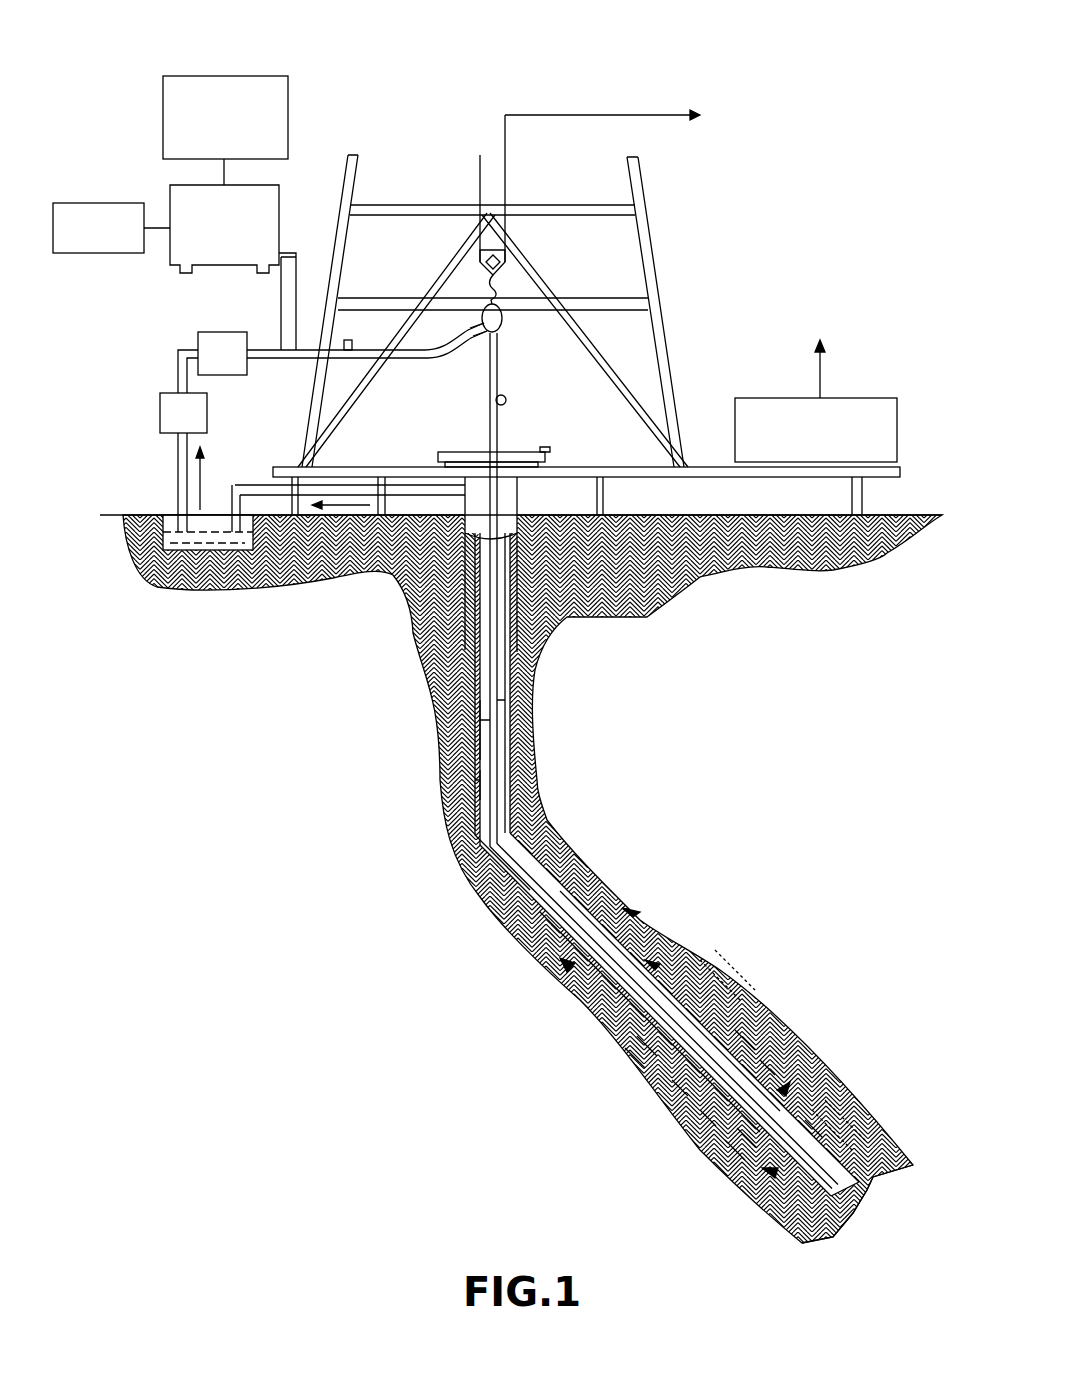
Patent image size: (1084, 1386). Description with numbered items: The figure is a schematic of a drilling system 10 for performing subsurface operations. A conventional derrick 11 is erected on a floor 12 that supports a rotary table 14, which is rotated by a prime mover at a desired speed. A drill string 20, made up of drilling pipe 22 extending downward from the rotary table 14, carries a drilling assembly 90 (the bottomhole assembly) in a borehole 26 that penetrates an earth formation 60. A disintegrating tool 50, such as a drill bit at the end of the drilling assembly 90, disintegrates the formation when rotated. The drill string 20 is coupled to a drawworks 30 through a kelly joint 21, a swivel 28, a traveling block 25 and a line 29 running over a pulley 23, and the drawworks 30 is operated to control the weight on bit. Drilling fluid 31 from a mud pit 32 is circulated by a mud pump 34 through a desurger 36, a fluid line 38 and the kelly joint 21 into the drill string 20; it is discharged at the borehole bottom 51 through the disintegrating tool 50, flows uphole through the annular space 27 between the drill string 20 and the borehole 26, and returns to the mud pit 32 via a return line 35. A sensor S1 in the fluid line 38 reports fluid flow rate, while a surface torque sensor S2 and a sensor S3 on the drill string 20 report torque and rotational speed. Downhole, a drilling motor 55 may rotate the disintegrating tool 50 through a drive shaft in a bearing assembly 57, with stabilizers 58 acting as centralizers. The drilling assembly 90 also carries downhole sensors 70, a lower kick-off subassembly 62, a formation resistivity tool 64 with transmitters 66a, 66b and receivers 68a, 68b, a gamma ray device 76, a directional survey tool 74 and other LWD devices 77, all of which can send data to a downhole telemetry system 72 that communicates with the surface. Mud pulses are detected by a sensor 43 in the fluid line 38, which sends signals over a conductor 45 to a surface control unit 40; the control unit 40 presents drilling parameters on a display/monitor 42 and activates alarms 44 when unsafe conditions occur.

The drilling system 10 is at (410, 130).
The derrick 11 is at (660, 320).
The floor 12 is at (688, 467).
The rotary table 14 is at (510, 452).
The drill string 20 is at (510, 680).
The kelly joint 21 is at (498, 398).
The drilling pipe 22 is at (480, 720).
The pulley 23 is at (503, 268).
The traveling block 25 is at (492, 304).
The borehole 26 is at (538, 835).
The annular space 27 is at (558, 870).
The swivel 28 is at (485, 350).
The line 29 is at (507, 184).
The drawworks 30 is at (860, 398).
The drilling fluid 31 is at (172, 550).
The mud pit 32 is at (215, 540).
The mud pump 34 is at (160, 413).
The return line 35 is at (418, 497).
The desurger 36 is at (198, 340).
The fluid line 38 is at (292, 358).
The surface control unit 40 is at (170, 197).
The display/monitor 42 is at (200, 76).
The sensor 43 is at (290, 345).
The alarms 44 is at (75, 253).
The conductor 45 is at (296, 257).
The disintegrating tool 50 is at (885, 1165).
The borehole bottom 51 is at (830, 1240).
The drilling motor 55 is at (655, 970).
The bearing assembly 57 is at (775, 1175).
The stabilizers 58 is at (705, 982).
The earth formation 60 is at (646, 588).
The lower kick-off subassembly 62 is at (810, 1123).
The formation resistivity tool 64 is at (714, 1118).
The transmitter 66a is at (637, 1058).
The transmitter 66b is at (740, 1150).
The receiver 68a is at (690, 1090).
The receiver 68b is at (737, 1043).
The downhole sensors 70 is at (537, 913).
The downhole telemetry system 72 is at (487, 780).
The directional survey tool 74 is at (760, 1067).
The gamma ray device 76 is at (790, 1088).
The LWD devices 77 is at (563, 968).
The drilling assembly 90 is at (633, 917).
The sensor S1 is at (348, 340).
The surface torque sensor S2 is at (496, 400).
The sensor S3 is at (545, 452).